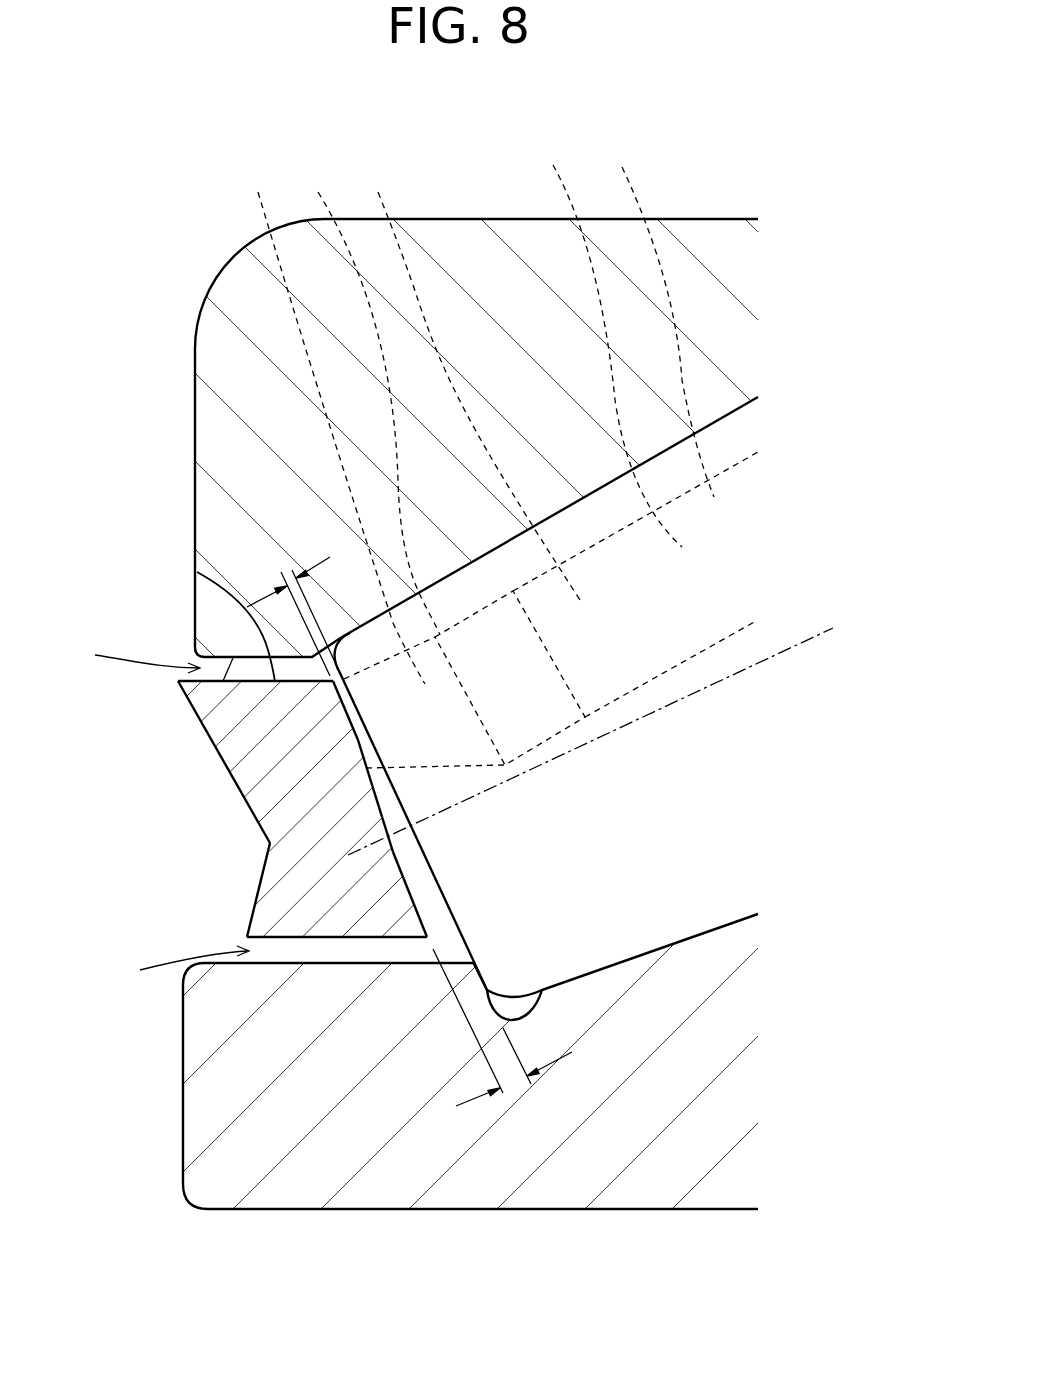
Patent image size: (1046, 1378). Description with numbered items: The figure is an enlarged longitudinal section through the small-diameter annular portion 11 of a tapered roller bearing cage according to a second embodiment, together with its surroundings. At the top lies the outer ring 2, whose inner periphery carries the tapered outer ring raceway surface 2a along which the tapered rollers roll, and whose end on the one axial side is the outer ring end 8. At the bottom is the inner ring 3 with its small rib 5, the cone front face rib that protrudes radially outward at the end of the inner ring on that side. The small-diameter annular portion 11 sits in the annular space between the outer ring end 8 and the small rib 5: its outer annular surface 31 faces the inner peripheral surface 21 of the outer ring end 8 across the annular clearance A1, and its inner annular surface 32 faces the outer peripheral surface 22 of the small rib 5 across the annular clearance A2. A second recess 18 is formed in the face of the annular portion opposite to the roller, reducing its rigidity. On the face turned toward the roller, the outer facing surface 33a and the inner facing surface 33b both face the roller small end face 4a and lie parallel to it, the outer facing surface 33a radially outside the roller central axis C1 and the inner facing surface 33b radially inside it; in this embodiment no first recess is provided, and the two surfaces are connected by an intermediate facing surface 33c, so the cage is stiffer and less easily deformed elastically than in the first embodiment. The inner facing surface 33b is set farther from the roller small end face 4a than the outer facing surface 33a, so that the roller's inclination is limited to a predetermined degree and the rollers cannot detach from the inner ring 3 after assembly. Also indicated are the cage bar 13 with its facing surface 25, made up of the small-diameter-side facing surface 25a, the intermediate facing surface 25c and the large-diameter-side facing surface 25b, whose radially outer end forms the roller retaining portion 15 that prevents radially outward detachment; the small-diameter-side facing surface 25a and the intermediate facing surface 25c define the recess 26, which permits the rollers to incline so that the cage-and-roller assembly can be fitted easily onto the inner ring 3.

The outer ring 2 is at (523, 450).
The outer ring raceway surface 2a is at (723, 423).
The inner ring 3 is at (523, 1061).
The small rib 5 is at (238, 987).
The roller small end face 4a is at (359, 800).
The outer ring end 8 is at (227, 628).
The small-diameter annular portion 11 is at (232, 721).
The cage bar 13 is at (609, 340).
The roller retaining portion 15 is at (658, 315).
The second recess 18 is at (268, 844).
The inner peripheral surface 21 is at (223, 681).
The outer peripheral surface 22 is at (280, 960).
The facing surface 25 is at (401, 390).
The small-diameter-side facing surface 25a is at (331, 422).
The large-diameter-side facing surface 25b is at (469, 380).
The intermediate facing surface 25c is at (370, 398).
The recess 26 is at (527, 717).
The outer annular surface 31 is at (197, 572).
The inner annular surface 32 is at (352, 939).
The outer facing surface 33a is at (358, 740).
The inner facing surface 33b is at (414, 906).
The intermediate facing surface 33c is at (395, 858).
The annular clearance A1 is at (130, 656).
The annular clearance A2 is at (174, 965).
The central axis C1 is at (795, 647).